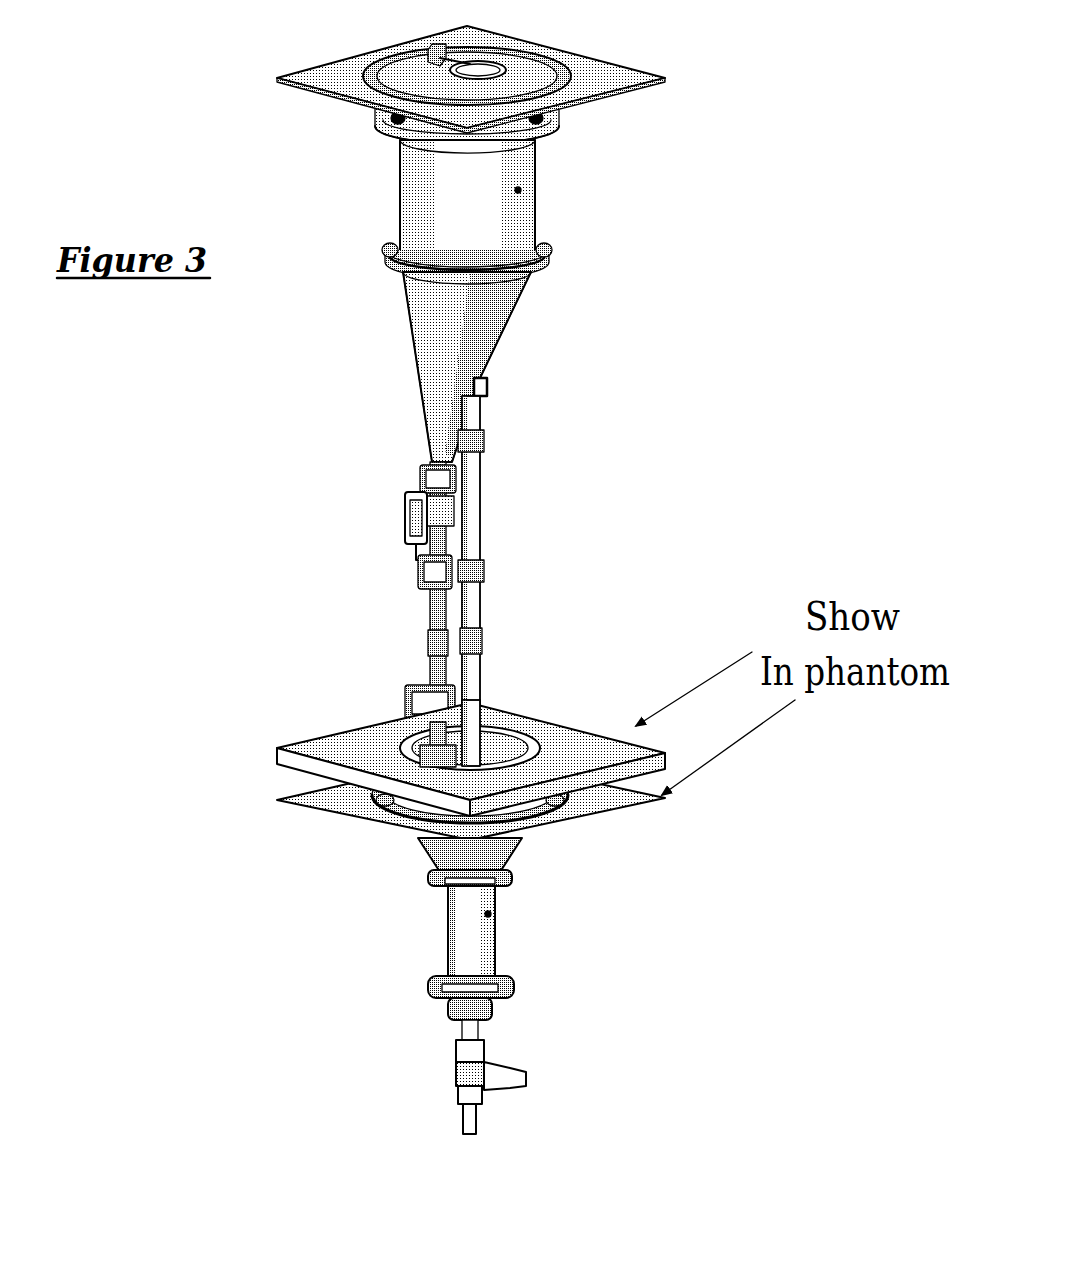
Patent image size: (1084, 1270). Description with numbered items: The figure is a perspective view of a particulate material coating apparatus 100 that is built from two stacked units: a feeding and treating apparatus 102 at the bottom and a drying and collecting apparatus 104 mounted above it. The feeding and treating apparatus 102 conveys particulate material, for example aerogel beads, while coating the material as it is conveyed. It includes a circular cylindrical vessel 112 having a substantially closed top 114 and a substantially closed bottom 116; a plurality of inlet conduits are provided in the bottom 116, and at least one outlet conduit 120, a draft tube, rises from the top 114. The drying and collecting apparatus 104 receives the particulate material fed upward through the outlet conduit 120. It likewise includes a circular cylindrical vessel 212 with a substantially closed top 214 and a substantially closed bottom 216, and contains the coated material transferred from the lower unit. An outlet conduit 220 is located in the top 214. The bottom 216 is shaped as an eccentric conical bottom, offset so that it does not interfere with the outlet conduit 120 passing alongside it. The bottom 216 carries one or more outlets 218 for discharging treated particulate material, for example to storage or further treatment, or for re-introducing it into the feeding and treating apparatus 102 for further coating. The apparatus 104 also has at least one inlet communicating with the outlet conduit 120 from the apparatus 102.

The particulate material coating apparatus 100 is at (475, 580).
The feeding and treating apparatus 102 is at (536, 945).
The drying and collecting apparatus 104 is at (407, 396).
The vessel 112 is at (446, 903).
The substantially closed top 114 is at (392, 812).
The substantially closed bottom 116 is at (458, 1003).
The outlet conduit 120 is at (482, 410).
The vessel 212 is at (440, 232).
The substantially closed top 214 is at (385, 107).
The substantially closed bottom 216 is at (418, 400).
The outlet 218 is at (428, 482).
The outlet conduit 220 is at (537, 121).